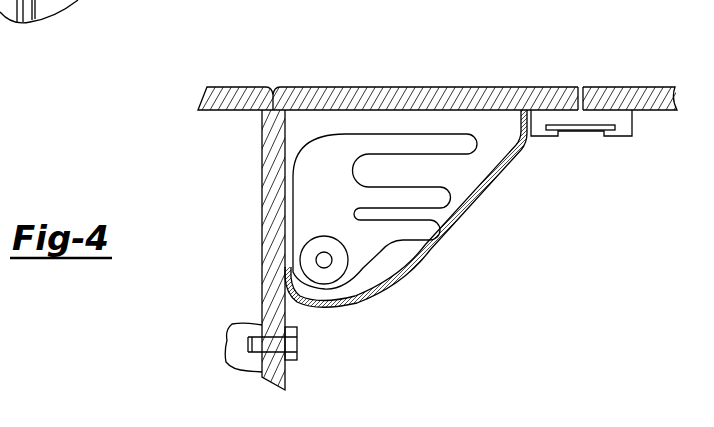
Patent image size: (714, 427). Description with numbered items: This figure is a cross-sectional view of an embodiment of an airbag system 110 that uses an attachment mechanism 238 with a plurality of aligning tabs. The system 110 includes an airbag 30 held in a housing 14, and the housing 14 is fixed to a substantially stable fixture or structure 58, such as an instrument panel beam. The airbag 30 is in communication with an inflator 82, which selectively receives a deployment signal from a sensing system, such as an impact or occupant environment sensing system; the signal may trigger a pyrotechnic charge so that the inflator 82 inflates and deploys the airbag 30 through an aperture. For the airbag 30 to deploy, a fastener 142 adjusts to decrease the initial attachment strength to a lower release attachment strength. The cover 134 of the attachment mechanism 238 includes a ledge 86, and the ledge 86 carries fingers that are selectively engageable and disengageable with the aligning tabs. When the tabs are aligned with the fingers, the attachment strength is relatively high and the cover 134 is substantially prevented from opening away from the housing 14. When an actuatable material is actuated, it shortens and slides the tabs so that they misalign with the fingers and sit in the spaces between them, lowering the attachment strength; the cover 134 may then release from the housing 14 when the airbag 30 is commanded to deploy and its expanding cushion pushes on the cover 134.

The airbag system 110 is at (295, 46).
The cover 134 is at (413, 87).
The attachment mechanism 238 is at (603, 68).
The fastener 142 is at (580, 133).
The housing 14 is at (287, 374).
The airbag 30 is at (298, 150).
The inflator 82 is at (329, 270).
The ledge 86 is at (540, 138).
The structure 58 is at (230, 352).